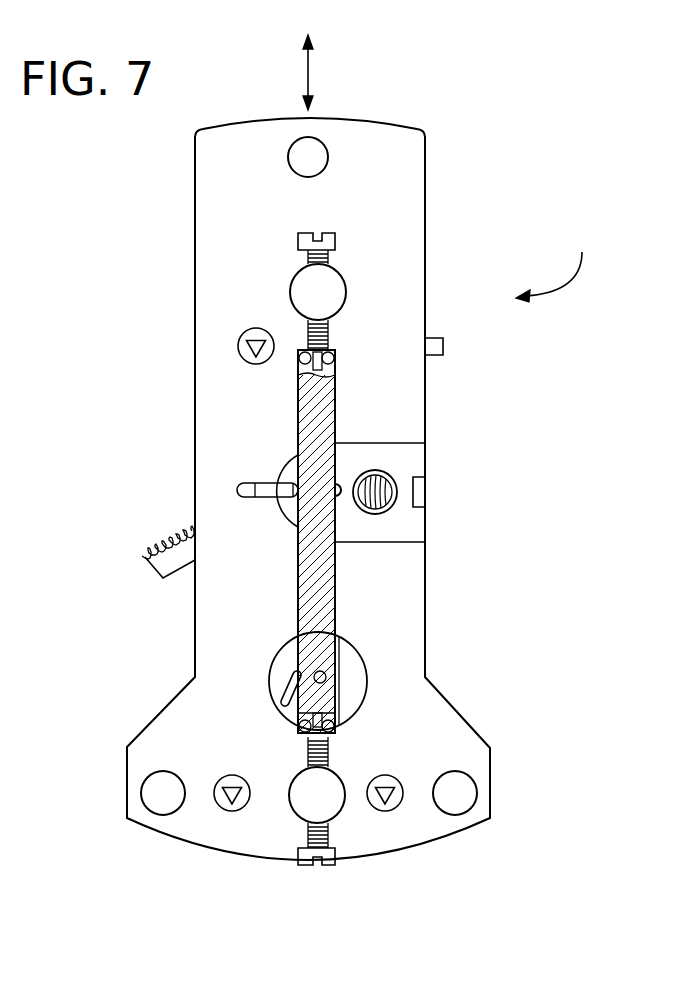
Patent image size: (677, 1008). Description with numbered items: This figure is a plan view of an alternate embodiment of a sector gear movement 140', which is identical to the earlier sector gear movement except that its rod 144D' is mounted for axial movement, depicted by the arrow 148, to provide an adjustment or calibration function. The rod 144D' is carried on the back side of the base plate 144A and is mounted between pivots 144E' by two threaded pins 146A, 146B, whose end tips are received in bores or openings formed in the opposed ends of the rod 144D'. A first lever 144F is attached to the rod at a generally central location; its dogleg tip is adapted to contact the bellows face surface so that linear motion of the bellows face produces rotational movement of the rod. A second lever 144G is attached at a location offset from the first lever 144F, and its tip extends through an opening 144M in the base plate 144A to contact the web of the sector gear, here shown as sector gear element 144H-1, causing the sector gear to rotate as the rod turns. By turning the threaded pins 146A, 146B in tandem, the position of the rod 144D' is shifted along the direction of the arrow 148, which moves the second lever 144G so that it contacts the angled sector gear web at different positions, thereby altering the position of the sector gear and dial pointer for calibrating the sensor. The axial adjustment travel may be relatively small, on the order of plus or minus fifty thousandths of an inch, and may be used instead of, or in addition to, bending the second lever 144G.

The arrow 148 is at (308, 72).
The base plate 144A is at (404, 200).
The sector gear movement 140' is at (588, 262).
The threaded pin 146A is at (300, 232).
The pivots 144E' is at (213, 559).
The rod 144D' is at (214, 543).
The first lever 144F is at (237, 483).
The spring 144H-1 is at (163, 578).
The opening 144M is at (282, 663).
The second lever 144G is at (282, 700).
The threaded pin 146B is at (333, 858).